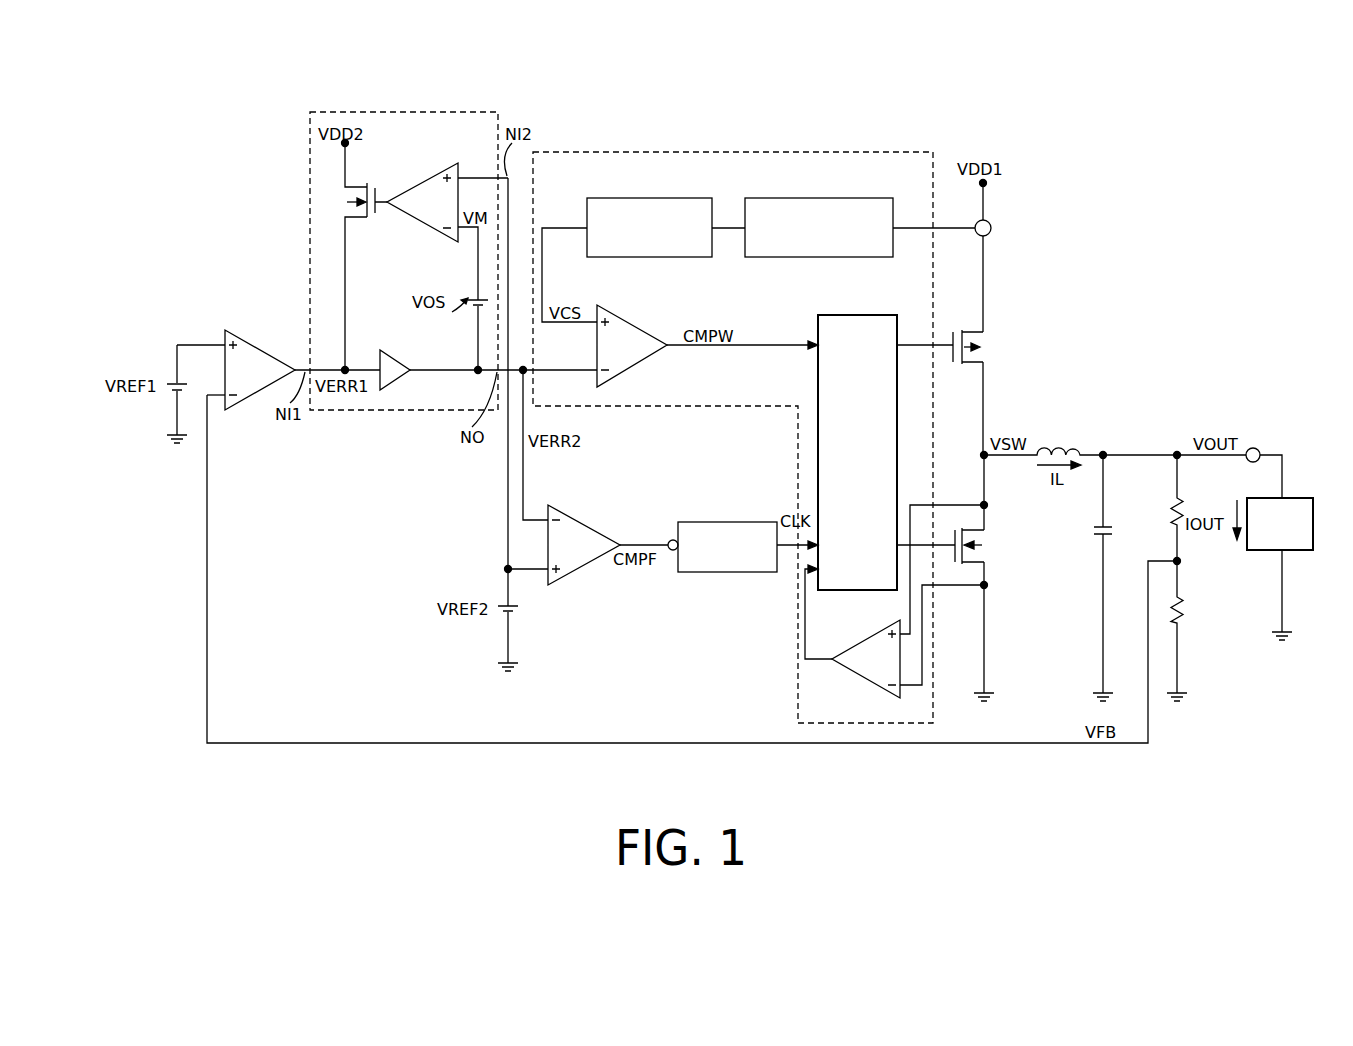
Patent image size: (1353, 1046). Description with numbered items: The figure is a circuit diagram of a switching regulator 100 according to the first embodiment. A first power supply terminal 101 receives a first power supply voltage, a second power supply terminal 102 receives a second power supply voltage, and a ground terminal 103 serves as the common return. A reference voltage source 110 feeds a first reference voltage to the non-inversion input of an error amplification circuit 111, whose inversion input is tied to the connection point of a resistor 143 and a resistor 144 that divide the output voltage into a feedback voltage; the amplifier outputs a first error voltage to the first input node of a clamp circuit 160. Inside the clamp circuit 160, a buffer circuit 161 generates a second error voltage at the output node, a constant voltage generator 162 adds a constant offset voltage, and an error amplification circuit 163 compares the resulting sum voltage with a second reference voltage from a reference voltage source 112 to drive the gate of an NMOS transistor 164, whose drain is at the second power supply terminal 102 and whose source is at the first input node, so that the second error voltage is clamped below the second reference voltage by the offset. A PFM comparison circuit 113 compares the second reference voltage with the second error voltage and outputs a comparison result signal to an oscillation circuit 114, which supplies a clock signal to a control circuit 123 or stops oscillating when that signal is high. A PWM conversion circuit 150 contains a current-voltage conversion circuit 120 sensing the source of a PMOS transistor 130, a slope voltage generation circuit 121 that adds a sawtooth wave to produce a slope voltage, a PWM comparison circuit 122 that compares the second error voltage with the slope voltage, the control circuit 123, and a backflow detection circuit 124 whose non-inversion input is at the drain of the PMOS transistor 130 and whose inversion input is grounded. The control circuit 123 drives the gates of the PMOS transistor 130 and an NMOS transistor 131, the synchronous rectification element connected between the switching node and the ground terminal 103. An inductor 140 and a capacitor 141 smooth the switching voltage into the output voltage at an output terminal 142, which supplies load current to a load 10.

The switching regulator 100 is at (1171, 141).
The power supply terminal 101 is at (987, 183).
The power supply terminal 102 is at (342, 143).
The ground terminal 103 is at (992, 693).
The load 10 is at (1275, 552).
The reference voltage source 110 is at (186, 384).
The error amplification circuit 111 is at (262, 348).
The reference voltage source 112 is at (512, 608).
The PFM comparison circuit 113 is at (583, 521).
The oscillation circuit 114 is at (725, 522).
The current-voltage conversion circuit 120 is at (822, 198).
The slope voltage generation circuit 121 is at (672, 198).
The PWM comparison circuit 122 is at (652, 326).
The control circuit 123 is at (855, 315).
The backflow detection circuit 124 is at (866, 684).
The PMOS transistor 130 is at (981, 360).
The NMOS transistor 131 is at (981, 560).
The inductor 140 is at (1075, 448).
The capacitor 141 is at (1108, 527).
The output terminal 142 is at (1257, 448).
The resistor 143 is at (1184, 505).
The resistor 144 is at (1184, 605).
The PWM conversion circuit 150 is at (880, 152).
The clamp circuit 160 is at (440, 112).
The buffer circuit 161 is at (395, 358).
The constant voltage generator 162 is at (476, 298).
The error amplification circuit 163 is at (430, 178).
The NMOS transistor 164 is at (367, 187).